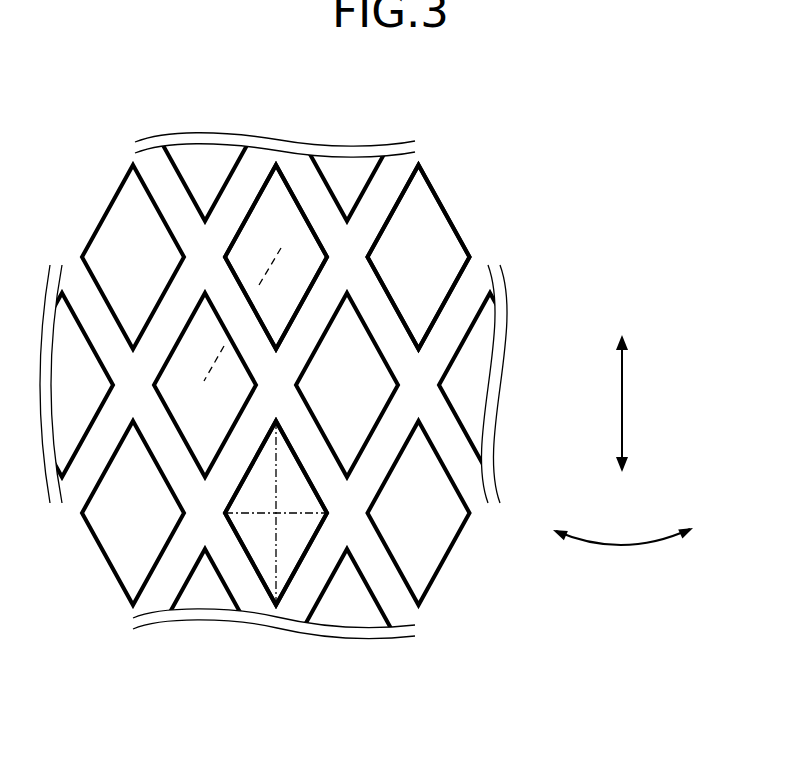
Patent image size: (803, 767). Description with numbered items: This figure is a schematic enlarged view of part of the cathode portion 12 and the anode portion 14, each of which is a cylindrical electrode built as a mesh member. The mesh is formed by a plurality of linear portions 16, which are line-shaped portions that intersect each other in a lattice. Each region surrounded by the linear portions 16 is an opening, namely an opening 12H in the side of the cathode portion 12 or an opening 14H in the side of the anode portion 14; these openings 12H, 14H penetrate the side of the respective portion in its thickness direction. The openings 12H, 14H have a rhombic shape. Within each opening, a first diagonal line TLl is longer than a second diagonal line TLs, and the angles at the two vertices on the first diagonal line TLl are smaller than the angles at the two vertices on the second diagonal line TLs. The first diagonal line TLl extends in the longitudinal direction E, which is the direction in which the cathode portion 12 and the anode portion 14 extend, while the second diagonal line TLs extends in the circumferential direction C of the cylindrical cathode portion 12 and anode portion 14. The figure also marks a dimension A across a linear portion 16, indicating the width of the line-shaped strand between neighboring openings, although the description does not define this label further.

The cathode portion 12 is at (288, 385).
The anode portion 14 is at (85, 175).
The linear portions 16 is at (228, 293).
The openings of the cathode portion 12H is at (395, 380).
The openings of the anode portion 14H is at (293, 478).
The strand width A is at (278, 263).
The longitudinal direction E is at (622, 398).
The circumferential direction C is at (634, 529).
The second diagonal line TLs is at (254, 516).
The first diagonal line TLl is at (276, 553).